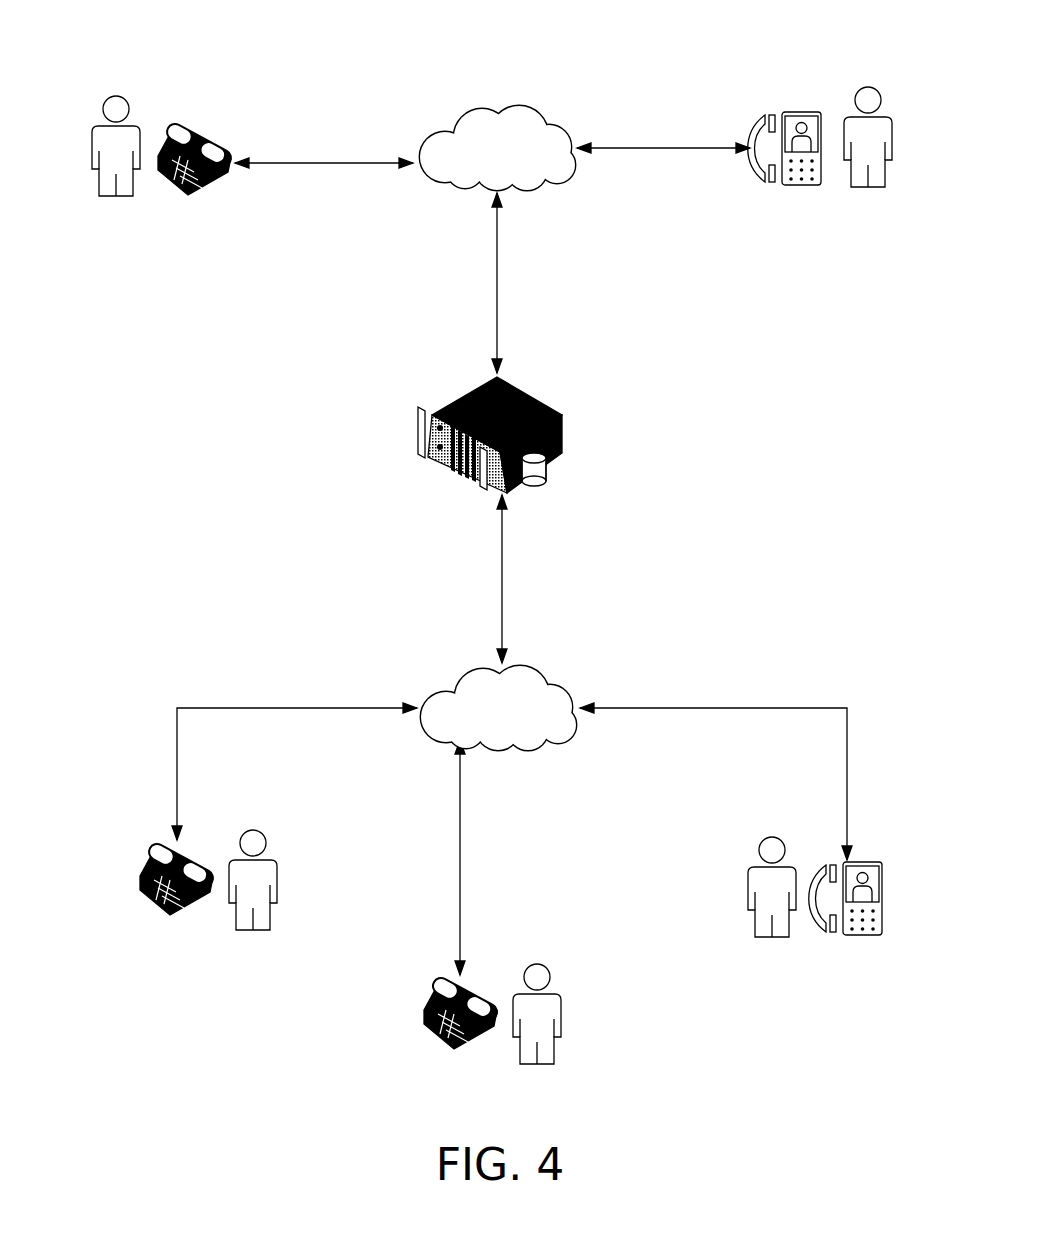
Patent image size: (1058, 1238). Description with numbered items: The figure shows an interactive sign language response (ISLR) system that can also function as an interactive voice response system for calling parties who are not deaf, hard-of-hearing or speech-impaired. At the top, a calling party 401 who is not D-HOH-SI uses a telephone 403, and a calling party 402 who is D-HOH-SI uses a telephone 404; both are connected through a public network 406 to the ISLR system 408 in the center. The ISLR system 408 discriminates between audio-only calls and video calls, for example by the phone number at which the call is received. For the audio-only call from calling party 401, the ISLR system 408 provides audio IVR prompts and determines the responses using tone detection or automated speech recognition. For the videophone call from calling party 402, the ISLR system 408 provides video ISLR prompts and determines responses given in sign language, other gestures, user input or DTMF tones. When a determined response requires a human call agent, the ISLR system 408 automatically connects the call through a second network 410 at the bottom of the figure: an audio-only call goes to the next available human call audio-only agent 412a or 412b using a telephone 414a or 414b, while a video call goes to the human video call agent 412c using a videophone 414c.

The calling party 401 is at (92, 133).
The calling party 402 is at (897, 127).
The telephone 403 is at (205, 137).
The telephone 404 is at (805, 112).
The public network 406 is at (518, 161).
The ISLR system 408 is at (533, 397).
The network 410 is at (477, 721).
The human call audio-only agent 412a is at (278, 877).
The human call audio-only agent 412b is at (562, 1010).
The human video call agent 412c is at (748, 875).
The telephone 414a is at (148, 858).
The telephone 414b is at (432, 988).
The videophone 414c is at (883, 898).